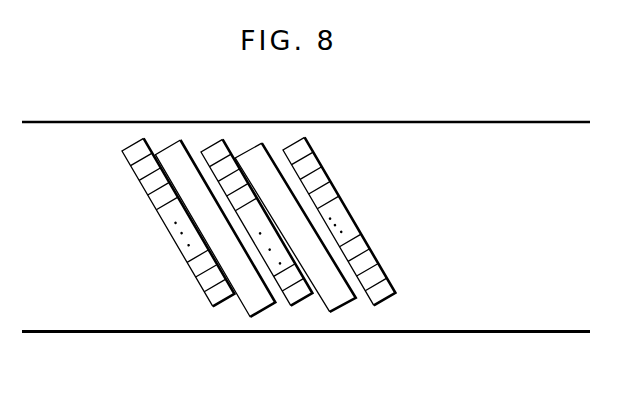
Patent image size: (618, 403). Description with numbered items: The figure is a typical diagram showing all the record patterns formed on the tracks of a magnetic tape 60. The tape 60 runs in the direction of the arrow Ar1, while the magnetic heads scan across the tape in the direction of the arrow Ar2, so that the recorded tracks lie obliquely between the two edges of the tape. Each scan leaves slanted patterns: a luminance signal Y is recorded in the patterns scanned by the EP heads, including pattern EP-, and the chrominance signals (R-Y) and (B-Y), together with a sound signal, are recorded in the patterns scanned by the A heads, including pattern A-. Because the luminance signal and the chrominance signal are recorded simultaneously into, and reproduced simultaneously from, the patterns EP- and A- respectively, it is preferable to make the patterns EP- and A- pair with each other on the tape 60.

The tape 60 is at (497, 131).
The pattern EP- is at (268, 145).
The pattern A- is at (318, 164).
The arrow Ar1 is at (98, 348).
The arrow Ar2 is at (352, 207).